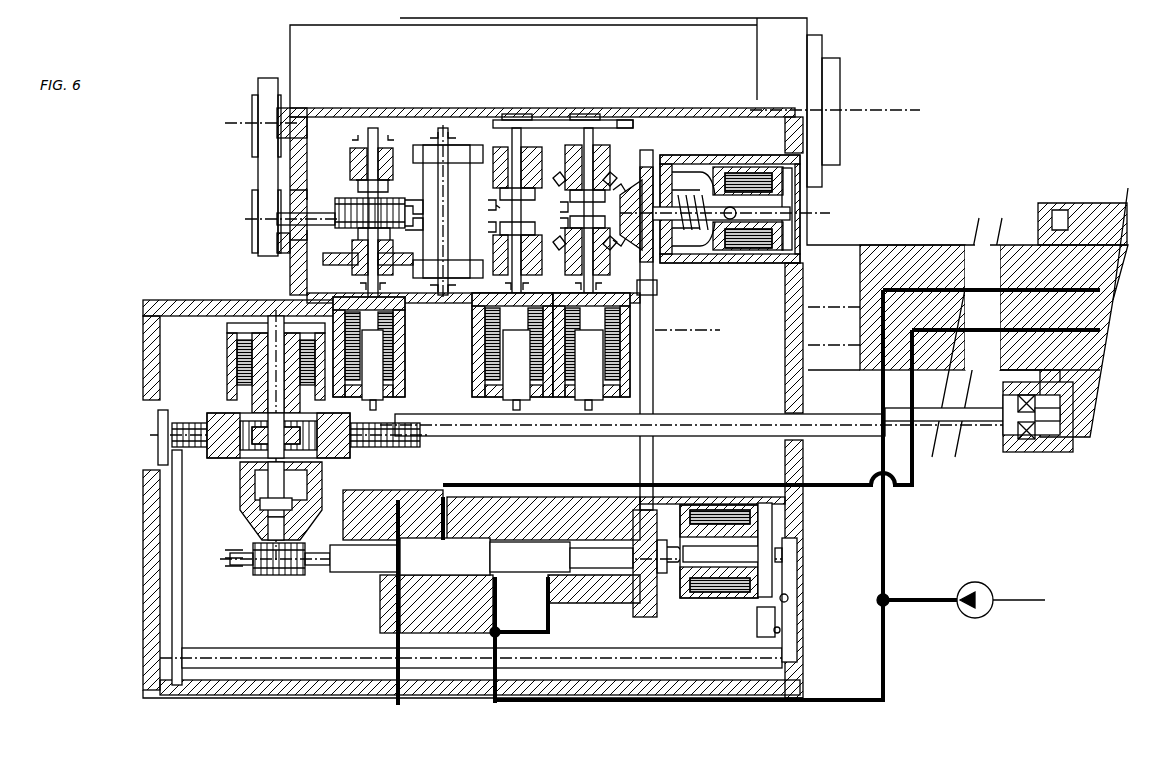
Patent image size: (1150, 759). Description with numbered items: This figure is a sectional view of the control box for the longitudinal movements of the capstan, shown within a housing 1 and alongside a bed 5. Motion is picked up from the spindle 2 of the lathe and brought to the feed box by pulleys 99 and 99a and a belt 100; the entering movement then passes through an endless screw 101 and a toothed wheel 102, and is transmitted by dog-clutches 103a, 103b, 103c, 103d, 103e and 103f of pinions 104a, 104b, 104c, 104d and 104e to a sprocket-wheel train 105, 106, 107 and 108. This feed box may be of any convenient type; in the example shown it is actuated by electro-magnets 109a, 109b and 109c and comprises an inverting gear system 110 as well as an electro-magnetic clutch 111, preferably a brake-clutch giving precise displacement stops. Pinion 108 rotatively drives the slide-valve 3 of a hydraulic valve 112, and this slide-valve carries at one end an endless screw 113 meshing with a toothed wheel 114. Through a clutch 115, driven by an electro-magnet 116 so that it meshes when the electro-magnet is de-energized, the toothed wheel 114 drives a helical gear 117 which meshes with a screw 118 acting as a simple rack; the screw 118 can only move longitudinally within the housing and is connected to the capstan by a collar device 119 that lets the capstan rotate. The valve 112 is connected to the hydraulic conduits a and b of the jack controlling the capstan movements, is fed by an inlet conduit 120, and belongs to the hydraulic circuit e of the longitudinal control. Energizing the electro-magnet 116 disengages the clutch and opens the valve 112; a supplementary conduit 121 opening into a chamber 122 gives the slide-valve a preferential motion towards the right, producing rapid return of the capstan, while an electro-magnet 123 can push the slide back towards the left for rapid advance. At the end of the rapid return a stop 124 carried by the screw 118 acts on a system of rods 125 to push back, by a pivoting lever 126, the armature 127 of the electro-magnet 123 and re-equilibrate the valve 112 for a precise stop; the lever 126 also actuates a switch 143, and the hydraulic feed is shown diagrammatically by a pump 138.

The housing 1 is at (295, 38).
The spindle 2 is at (283, 115).
The slide-valve 3 is at (610, 560).
The bed 5 is at (912, 245).
The pulley 99 is at (255, 202).
The pulley 99a is at (255, 148).
The belt 100 is at (257, 177).
The endless screw 101 is at (342, 205).
The toothed wheel 102 is at (348, 170).
The dog-clutch 103a is at (410, 202).
The dog-clutch 103b is at (408, 232).
The dog-clutch 103c is at (492, 206).
The dog-clutch 103d is at (492, 234).
The dog-clutch 103e is at (562, 214).
The dog-clutch 103f is at (562, 230).
The pinion 104a is at (412, 165).
The pinion 104b is at (470, 160).
The pinion 104c is at (518, 125).
The pinion 104d is at (547, 135).
The pinion 104e is at (620, 123).
The sprocket-wheel 105 is at (657, 272).
The sprocket-wheel 106 is at (655, 368).
The sprocket-wheel 107 is at (652, 405).
The pinion 108 is at (652, 605).
The electro-magnet 109a is at (405, 330).
The electro-magnet 109b is at (482, 345).
The electro-magnet 109c is at (610, 322).
The inverting gear system 110 is at (640, 175).
The electro-magnetic clutch 111 is at (738, 205).
The hydraulic valve 112 is at (415, 505).
The endless screw 113 is at (255, 575).
The toothed wheel 114 is at (292, 580).
The clutch 115 is at (325, 490).
The electro-magnet 116 is at (240, 358).
The helical gear 117 is at (245, 420).
The screw 118 is at (165, 448).
The collar device 119 is at (1040, 452).
The inlet conduit 120 is at (905, 600).
The supplementary conduit 121 is at (548, 598).
The chamber 122 is at (557, 520).
The electro-magnet 123 is at (757, 627).
The stop 124 is at (160, 427).
The rods 125 is at (180, 508).
The pivoting lever 126 is at (792, 622).
The armature 127 is at (768, 530).
The pump 138 is at (990, 615).
The switch 143 is at (745, 583).
The hydraulic conduit a is at (1008, 287).
The hydraulic conduit b is at (1020, 328).
The hydraulic circuit e is at (398, 697).